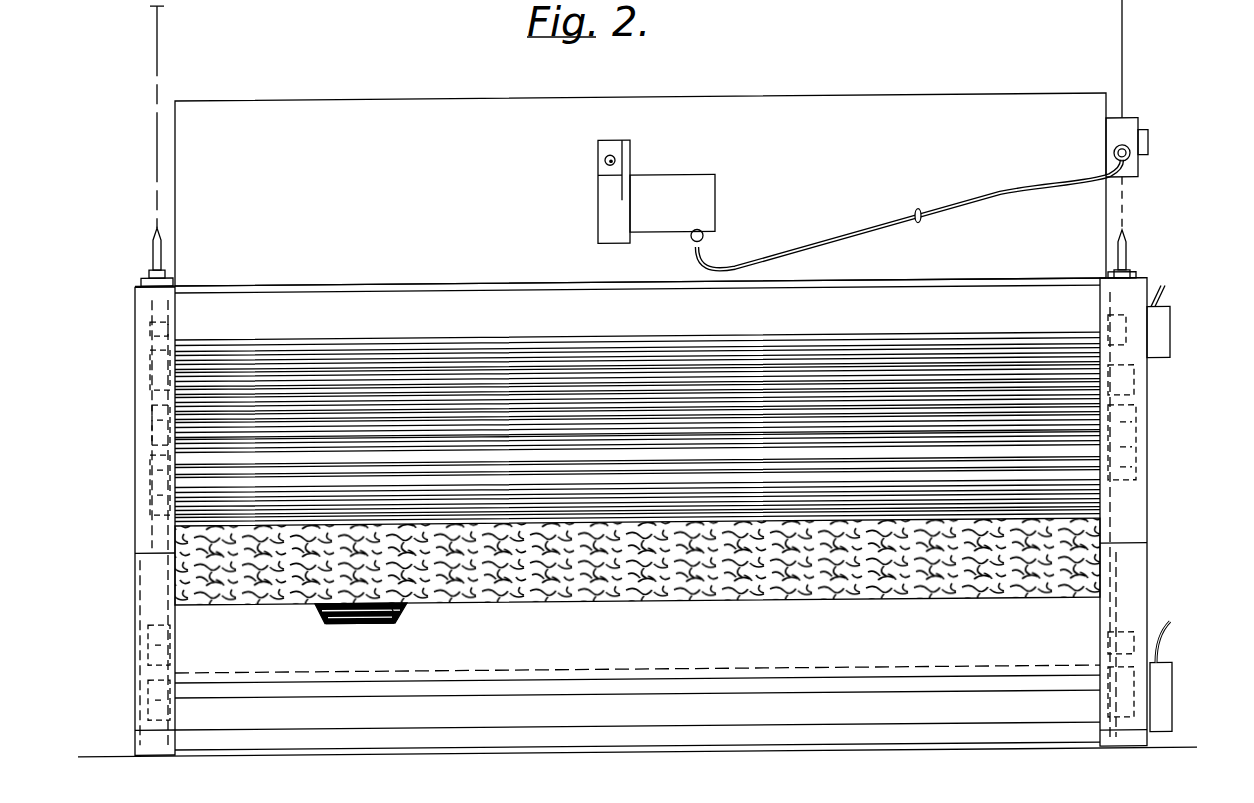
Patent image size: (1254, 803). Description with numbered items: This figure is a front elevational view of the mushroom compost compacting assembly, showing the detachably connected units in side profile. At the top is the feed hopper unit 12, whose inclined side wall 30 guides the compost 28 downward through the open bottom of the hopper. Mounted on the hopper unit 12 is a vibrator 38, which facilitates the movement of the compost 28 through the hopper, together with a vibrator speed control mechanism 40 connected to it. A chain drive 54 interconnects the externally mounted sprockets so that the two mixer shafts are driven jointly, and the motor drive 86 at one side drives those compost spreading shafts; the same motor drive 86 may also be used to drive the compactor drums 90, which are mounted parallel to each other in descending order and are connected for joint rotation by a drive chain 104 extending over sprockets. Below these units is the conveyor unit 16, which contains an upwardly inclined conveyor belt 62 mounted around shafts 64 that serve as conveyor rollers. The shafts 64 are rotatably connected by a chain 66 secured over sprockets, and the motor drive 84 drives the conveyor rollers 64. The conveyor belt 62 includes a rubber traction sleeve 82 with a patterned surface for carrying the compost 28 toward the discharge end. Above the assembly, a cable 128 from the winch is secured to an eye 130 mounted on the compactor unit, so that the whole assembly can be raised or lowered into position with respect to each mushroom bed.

The feed hopper unit 12 is at (1035, 102).
The conveyor unit 16 is at (955, 712).
The compost 28 is at (190, 580).
The inclined side wall 30 is at (412, 132).
The vibrator 38 is at (688, 199).
The vibrator speed control mechanism 40 is at (1135, 133).
The chain drive 54 is at (150, 331).
The conveyor belt 62 is at (318, 607).
The shafts 64 is at (350, 628).
The chain 66 is at (135, 660).
The rubber traction sleeve 82 is at (395, 622).
The motor drive 84 is at (1165, 699).
The motor drive 86 is at (1160, 347).
The compactor drums 90 is at (175, 372).
The drive chain 104 is at (152, 455).
The cable 128 is at (152, 169).
The eye 130 is at (150, 257).